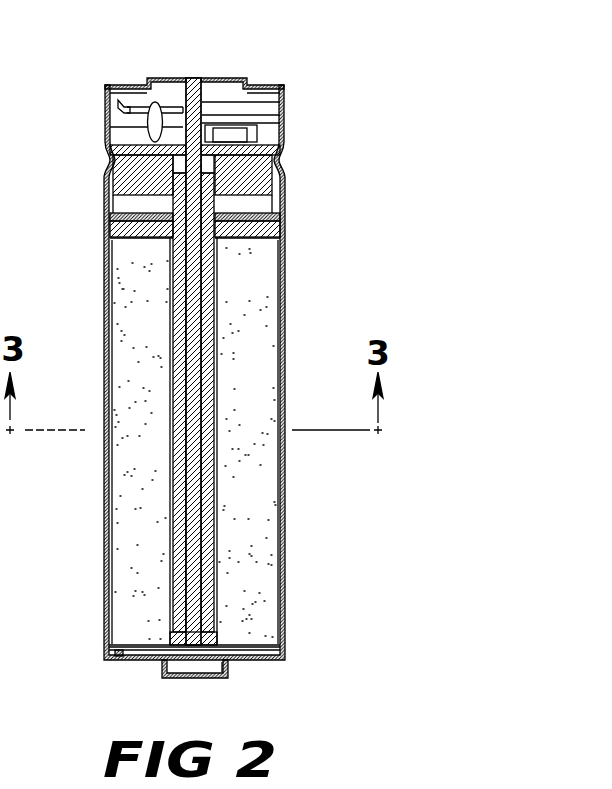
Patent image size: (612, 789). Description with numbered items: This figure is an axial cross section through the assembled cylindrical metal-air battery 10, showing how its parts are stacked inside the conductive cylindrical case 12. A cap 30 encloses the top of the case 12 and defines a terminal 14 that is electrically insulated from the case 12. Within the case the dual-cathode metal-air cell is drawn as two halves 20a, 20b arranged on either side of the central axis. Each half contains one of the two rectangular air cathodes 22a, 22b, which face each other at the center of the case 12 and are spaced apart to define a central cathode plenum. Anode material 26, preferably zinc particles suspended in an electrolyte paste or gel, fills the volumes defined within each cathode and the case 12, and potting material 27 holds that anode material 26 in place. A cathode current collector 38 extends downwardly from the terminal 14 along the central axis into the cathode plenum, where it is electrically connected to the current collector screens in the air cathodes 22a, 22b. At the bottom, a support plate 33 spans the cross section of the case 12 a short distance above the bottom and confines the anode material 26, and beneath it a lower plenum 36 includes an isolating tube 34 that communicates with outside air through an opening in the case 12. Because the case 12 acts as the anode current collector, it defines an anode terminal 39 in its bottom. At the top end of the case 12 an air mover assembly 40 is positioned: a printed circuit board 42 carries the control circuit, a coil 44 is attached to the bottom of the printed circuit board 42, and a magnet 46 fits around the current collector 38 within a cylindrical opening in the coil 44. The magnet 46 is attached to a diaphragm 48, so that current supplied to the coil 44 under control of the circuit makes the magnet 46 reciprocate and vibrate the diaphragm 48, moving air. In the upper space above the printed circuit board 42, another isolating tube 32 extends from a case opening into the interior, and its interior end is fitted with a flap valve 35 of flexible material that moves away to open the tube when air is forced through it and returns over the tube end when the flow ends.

The cylindrical metal-air battery 10 is at (338, 73).
The conductive cylindrical case 12 is at (283, 577).
The terminal 14 is at (183, 82).
The dual-cathode metal-air cell portion 20a is at (140, 518).
The dual-cathode metal-air cell portion 20b is at (257, 515).
The air cathode 22a is at (178, 328).
The air cathode 22b is at (213, 308).
The anode material 26 is at (133, 402).
The potting material 27 is at (253, 230).
The cap 30 is at (262, 87).
The isolating tube 32 is at (140, 112).
The support plate 33 is at (133, 645).
The isolating tube 34 is at (150, 652).
The flap valve 35 is at (123, 105).
The lower plenum 36 is at (196, 668).
The cathode current collector 38 is at (192, 270).
The anode terminal 39 is at (224, 674).
The air mover assembly 40 is at (217, 93).
The printed circuit board 42 is at (120, 125).
The coil 44 is at (262, 178).
The magnet 46 is at (213, 203).
The diaphragm 48 is at (270, 212).